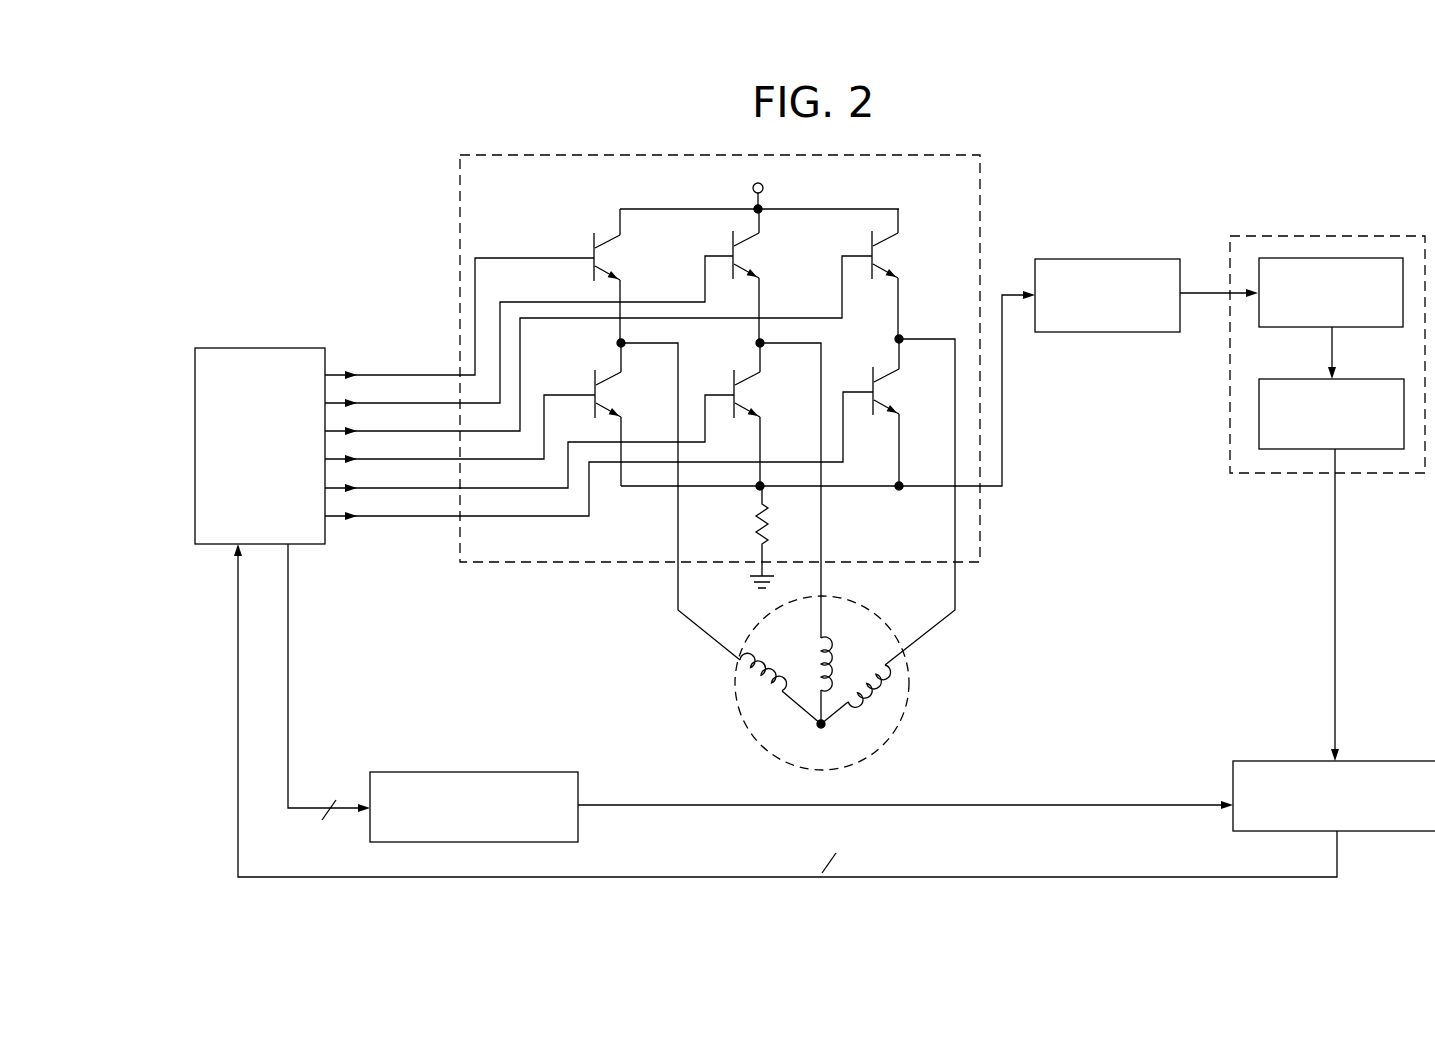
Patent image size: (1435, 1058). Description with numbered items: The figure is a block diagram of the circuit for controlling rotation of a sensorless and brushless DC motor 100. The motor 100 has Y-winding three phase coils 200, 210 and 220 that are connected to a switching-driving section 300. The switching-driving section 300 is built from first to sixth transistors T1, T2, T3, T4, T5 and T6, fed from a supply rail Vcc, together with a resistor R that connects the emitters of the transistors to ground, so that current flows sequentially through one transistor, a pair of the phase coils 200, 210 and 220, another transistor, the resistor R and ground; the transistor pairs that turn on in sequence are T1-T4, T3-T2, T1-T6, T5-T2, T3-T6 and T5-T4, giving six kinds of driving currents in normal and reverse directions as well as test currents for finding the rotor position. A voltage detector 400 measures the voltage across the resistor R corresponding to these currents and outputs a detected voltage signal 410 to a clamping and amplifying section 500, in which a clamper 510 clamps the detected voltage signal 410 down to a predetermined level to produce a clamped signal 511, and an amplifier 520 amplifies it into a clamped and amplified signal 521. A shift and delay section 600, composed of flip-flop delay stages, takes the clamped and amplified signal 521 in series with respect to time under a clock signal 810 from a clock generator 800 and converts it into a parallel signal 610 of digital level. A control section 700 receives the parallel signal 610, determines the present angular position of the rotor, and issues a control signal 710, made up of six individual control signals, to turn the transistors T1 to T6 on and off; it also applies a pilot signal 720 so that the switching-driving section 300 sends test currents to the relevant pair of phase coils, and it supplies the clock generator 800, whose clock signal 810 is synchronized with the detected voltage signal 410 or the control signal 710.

The motor 100 is at (806, 558).
The first phase coil 200 is at (765, 688).
The second phase coil 210 is at (830, 662).
The third phase coil 220 is at (873, 686).
The switching-driving section 300 is at (553, 563).
The voltage detector 400 is at (1105, 259).
The detected voltage signal 410 is at (1188, 278).
The clamping and amplifying section 500 is at (1275, 359).
The clamper 510 is at (1330, 258).
The clamped signal 511 is at (1347, 340).
The amplifier 520 is at (1293, 449).
The clamped and amplified signal 521 is at (1349, 555).
The shift and delay section 600 is at (1285, 761).
The parallel signal of digital level 610 is at (1115, 853).
The control section 700 is at (255, 348).
The control signal 710 is at (400, 362).
The pilot signal 720 is at (302, 637).
The clock generator 800 is at (474, 772).
The clock signal 810 is at (985, 785).
The first transistor T1 is at (605, 255).
The second transistor T2 is at (606, 392).
The third transistor T3 is at (744, 253).
The fourth transistor T4 is at (745, 392).
The fifth transistor T5 is at (883, 253).
The sixth transistor T6 is at (884, 389).
The resistor R is at (756, 526).
The supply voltage Vcc is at (759, 184).